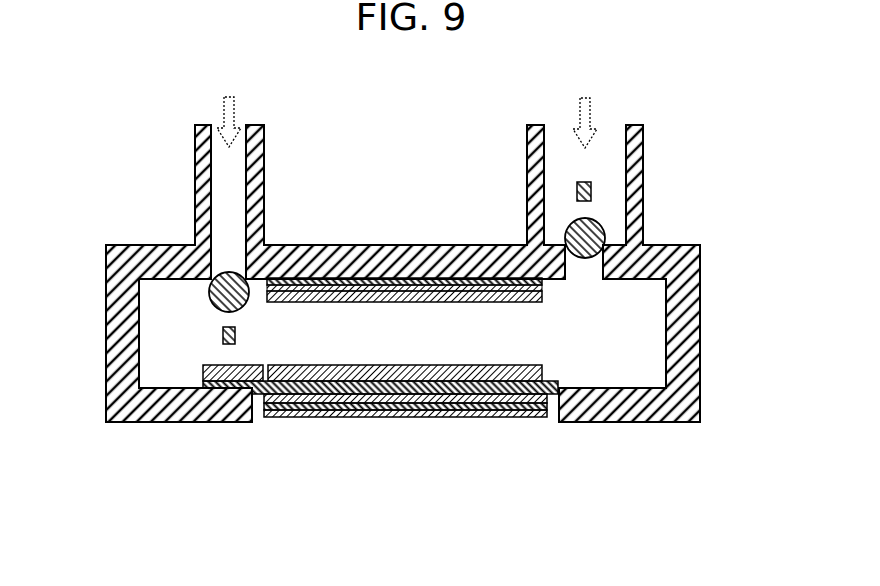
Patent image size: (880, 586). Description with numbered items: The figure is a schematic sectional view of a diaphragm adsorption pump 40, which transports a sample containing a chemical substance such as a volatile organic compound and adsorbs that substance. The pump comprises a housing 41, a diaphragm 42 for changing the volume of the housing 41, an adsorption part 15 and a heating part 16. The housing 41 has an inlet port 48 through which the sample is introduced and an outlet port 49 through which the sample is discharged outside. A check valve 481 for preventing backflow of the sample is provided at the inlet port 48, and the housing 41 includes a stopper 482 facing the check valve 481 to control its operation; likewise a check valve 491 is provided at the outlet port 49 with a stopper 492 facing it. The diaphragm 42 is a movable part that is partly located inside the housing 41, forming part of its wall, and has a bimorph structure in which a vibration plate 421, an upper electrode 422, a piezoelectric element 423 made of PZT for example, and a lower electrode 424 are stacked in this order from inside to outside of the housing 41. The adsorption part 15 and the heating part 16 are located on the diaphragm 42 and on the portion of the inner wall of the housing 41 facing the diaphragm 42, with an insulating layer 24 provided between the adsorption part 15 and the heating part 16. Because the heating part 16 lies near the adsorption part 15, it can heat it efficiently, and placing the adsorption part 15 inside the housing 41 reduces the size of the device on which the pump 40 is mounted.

The adsorption pump 40 is at (690, 93).
The housing 41 is at (700, 372).
The diaphragm 42 is at (518, 433).
The vibration plate 421 is at (437, 374).
The upper electrode 422 is at (413, 396).
The piezoelectric element 423 is at (382, 400).
The lower electrode 424 is at (353, 417).
The inlet port 48 is at (227, 253).
The check valve 481 is at (217, 278).
The stopper 482 is at (222, 334).
The outlet port 49 is at (590, 270).
The check valve 491 is at (603, 229).
The stopper 492 is at (583, 182).
The insulating layer 24 is at (324, 375).
The heating part 16 is at (414, 377).
The adsorption part 15 is at (203, 370).